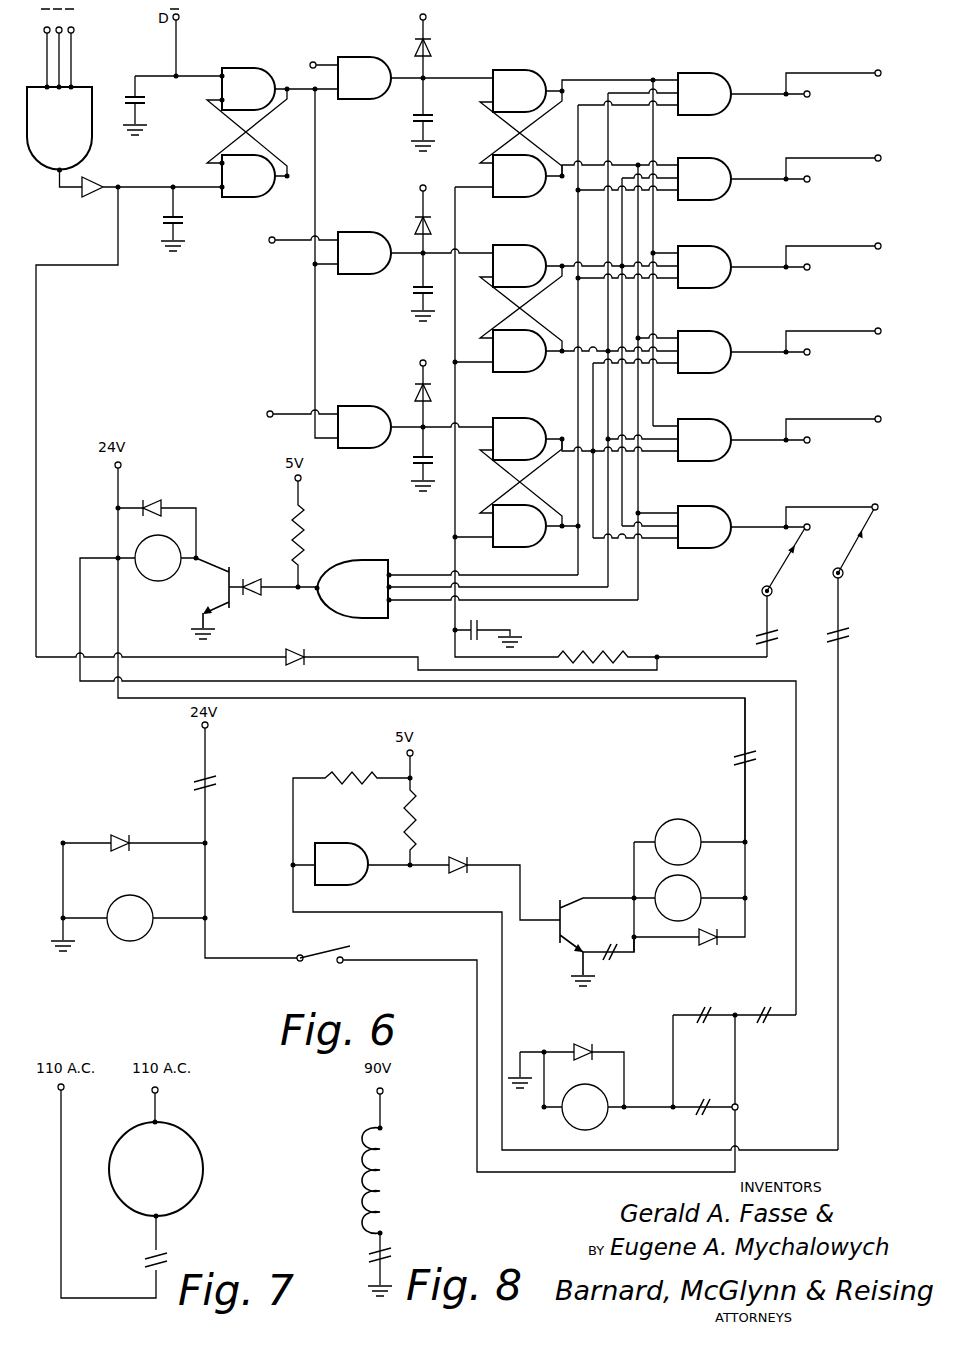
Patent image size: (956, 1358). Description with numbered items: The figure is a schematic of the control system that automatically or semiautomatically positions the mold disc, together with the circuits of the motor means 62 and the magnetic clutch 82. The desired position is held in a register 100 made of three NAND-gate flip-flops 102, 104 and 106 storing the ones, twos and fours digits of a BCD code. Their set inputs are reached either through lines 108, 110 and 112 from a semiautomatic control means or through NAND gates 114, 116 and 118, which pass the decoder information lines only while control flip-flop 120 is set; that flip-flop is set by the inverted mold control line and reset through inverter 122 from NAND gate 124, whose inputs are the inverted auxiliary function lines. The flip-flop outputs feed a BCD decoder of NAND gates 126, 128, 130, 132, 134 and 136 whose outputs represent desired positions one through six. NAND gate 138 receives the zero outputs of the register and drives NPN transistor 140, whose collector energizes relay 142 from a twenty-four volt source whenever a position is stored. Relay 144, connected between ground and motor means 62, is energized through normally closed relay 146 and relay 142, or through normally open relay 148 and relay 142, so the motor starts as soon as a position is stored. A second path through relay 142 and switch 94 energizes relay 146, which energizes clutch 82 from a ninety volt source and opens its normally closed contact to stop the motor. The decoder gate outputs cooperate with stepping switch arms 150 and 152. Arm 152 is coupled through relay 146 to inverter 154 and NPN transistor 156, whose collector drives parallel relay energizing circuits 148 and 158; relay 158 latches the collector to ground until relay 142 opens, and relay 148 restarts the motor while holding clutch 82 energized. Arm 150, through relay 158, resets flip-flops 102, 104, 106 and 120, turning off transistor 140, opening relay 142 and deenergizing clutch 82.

In FIG. 7, the motor means 62 is at (193, 1145).
In FIG. 8, the magnetic clutch 82 is at (386, 1178).
In FIG. 6, the switch 94 is at (310, 950).
In FIG. 6, the register 100 is at (530, 58).
In FIG. 6, the flip-flop 102 is at (527, 72).
In FIG. 6, the flip-flop 104 is at (522, 246).
In FIG. 6, the flip-flop 106 is at (526, 418).
In FIG. 6, the line 108 is at (428, 35).
In FIG. 6, the line 110 is at (420, 206).
In FIG. 6, the line 112 is at (416, 367).
In FIG. 6, the NAND gate 114 is at (362, 62).
In FIG. 6, the NAND gate 116 is at (359, 238).
In FIG. 6, the NAND gate 118 is at (364, 407).
In FIG. 6, the control flip-flop 120 is at (247, 76).
In FIG. 6, the inverter 122 is at (82, 190).
In FIG. 6, the NAND gate 124 is at (80, 122).
In FIG. 6, the NAND gate 126 is at (704, 78).
In FIG. 6, the NAND gate 128 is at (707, 163).
In FIG. 6, the NAND gate 130 is at (705, 252).
In FIG. 6, the NAND gate 132 is at (705, 340).
In FIG. 6, the NAND gate 134 is at (705, 425).
In FIG. 6, the NAND gate 136 is at (705, 513).
In FIG. 6, the NAND gate 138 is at (353, 560).
In FIG. 6, the NPN transistor 140 is at (234, 572).
In FIG. 6, the relay 142 is at (158, 576).
In FIG. 6, the relay 144 is at (571, 1116).
In FIG. 7, the relay 144 is at (165, 1258).
In FIG. 6, the relay 146 is at (844, 640).
In FIG. 8, the relay 146 is at (388, 1250).
In FIG. 6, the relay 148 is at (213, 778).
In FIG. 6, the arm 150 is at (777, 556).
In FIG. 6, the arm 152 is at (860, 547).
In FIG. 6, the inverter 154 is at (340, 844).
In FIG. 6, the NPN transistor 156 is at (561, 898).
In FIG. 6, the relay 158 is at (762, 642).